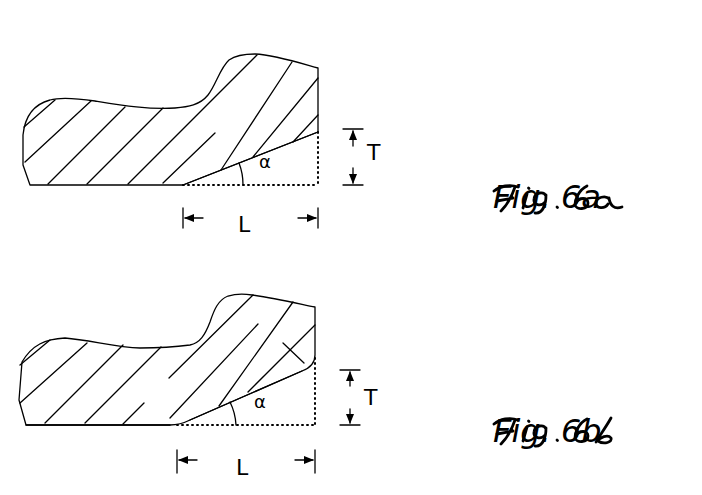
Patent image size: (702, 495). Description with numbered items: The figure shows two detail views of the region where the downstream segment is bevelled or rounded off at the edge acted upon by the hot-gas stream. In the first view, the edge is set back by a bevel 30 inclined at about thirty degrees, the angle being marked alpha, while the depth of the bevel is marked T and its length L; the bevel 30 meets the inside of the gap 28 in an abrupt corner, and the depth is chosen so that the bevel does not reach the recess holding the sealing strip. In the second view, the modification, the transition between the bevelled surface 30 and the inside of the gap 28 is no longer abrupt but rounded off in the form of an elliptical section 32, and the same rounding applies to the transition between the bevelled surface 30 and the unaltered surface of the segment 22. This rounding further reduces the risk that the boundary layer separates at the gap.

In FIG. 6A, the inside of the gap 28 is at (323, 93).
In FIG. 6B, the inside of the gap 28 is at (320, 335).
In FIG. 6A, the bevelled surface 30 is at (272, 148).
In FIG. 6B, the bevelled surface 30 is at (267, 388).
In FIG. 6B, the elliptical section 32 is at (174, 422).
In FIG. 6B, the unaltered surface of the segment 22 is at (75, 428).